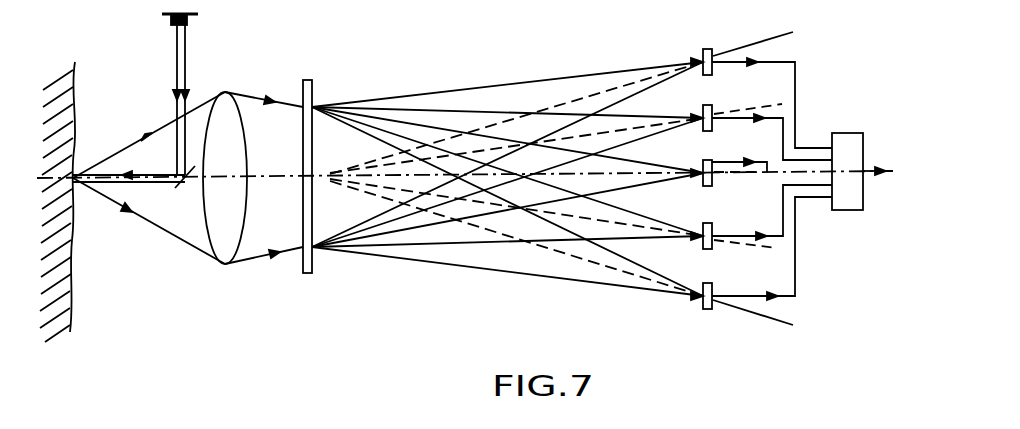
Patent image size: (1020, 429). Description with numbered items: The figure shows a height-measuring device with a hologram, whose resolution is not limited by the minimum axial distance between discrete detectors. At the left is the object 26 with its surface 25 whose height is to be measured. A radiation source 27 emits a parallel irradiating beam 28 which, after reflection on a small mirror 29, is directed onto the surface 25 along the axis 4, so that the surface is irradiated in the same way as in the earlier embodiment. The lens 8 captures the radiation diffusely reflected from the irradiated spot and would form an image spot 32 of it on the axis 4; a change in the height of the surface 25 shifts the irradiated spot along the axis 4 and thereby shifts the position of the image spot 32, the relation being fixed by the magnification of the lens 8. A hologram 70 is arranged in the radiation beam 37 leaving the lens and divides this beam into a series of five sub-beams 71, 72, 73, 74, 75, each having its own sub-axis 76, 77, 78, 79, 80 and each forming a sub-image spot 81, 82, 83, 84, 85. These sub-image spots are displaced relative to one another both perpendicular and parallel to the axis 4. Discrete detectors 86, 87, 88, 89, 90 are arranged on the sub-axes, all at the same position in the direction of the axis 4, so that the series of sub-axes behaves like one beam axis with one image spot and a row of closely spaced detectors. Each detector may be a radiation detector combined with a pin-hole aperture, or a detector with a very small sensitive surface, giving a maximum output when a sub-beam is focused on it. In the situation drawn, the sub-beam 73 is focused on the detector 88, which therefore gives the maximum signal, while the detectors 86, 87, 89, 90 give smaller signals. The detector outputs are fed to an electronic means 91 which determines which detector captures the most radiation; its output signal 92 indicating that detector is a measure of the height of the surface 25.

The axis 4 is at (281, 177).
The lens 8 is at (224, 265).
The surface 25 is at (60, 100).
The object 26 is at (63, 72).
The radiation source 27 is at (198, 14).
The parallel irradiating beam 28 is at (186, 50).
The small mirror 29 is at (178, 190).
The image spot 32 is at (172, 243).
The radiation beam 37 is at (266, 262).
The hologram 70 is at (310, 275).
The sub-beam 71 is at (547, 79).
The sub-beam 72 is at (631, 117).
The sub-beam 73 is at (634, 164).
The sub-beam 74 is at (661, 242).
The sub-beam 75 is at (651, 292).
The sub-axis 76 is at (752, 44).
The sub-axis 77 is at (759, 106).
The sub-axis 78 is at (738, 178).
The sub-axis 79 is at (764, 250).
The sub-axis 80 is at (772, 322).
The sub-image spot 81 is at (680, 66).
The sub-image spot 82 is at (676, 113).
The sub-image spot 83 is at (688, 167).
The sub-image spot 84 is at (716, 250).
The sub-image spot 85 is at (722, 312).
The discrete detector 86 is at (708, 48).
The discrete detector 87 is at (710, 105).
The discrete detector 88 is at (711, 160).
The discrete detector 89 is at (714, 226).
The discrete detector 90 is at (717, 288).
The electronic means 91 is at (845, 133).
The output signal 92 is at (882, 167).